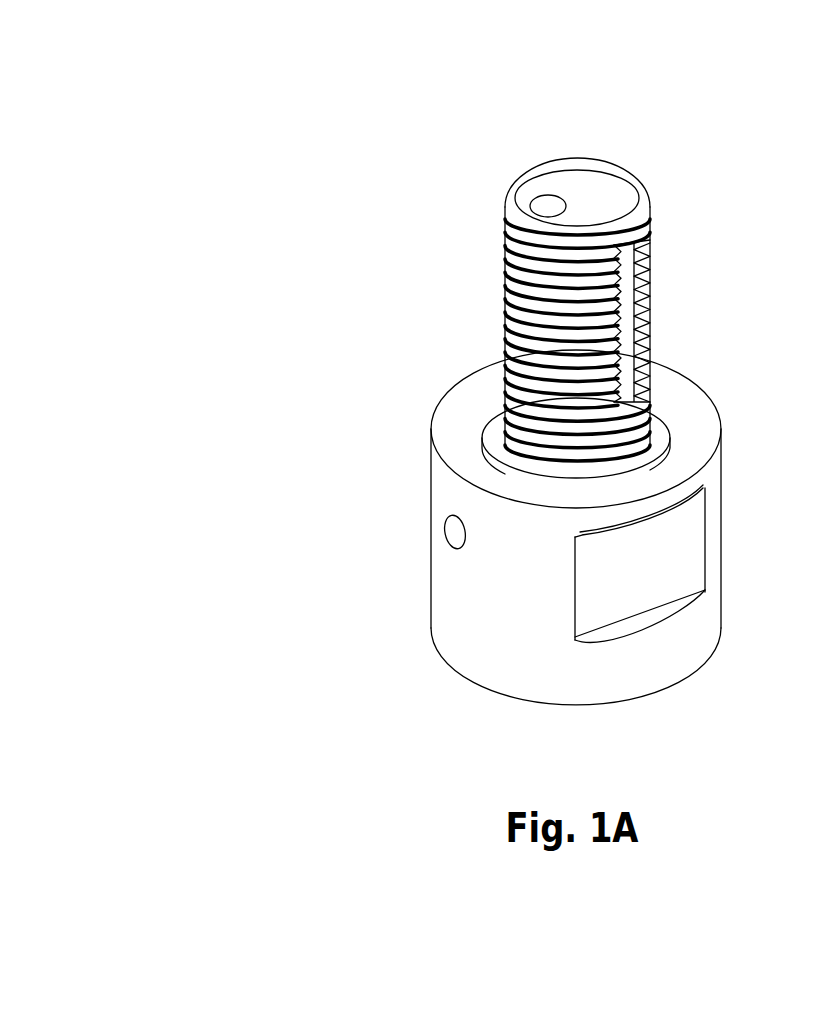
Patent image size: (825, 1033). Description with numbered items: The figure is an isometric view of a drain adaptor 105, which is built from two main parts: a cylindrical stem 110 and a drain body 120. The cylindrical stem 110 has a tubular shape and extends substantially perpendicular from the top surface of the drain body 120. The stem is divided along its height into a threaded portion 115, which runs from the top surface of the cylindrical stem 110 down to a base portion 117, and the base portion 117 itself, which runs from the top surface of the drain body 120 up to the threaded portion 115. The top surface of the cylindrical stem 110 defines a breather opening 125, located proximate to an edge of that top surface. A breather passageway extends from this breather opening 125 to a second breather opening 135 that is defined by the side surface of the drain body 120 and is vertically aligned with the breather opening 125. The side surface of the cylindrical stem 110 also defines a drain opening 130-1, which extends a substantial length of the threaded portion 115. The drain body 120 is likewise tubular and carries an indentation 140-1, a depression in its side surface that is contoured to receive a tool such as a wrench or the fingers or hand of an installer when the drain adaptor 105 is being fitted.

The drain adaptor 105 is at (147, 78).
The cylindrical stem 110 is at (495, 187).
The threaded portion 115 is at (653, 185).
The base portion 117 is at (493, 432).
The drain body 120 is at (733, 410).
The breather opening 125 is at (549, 207).
The drain opening 130-1 is at (618, 332).
The breather opening 135 is at (454, 529).
The indentation 140-1 is at (622, 591).